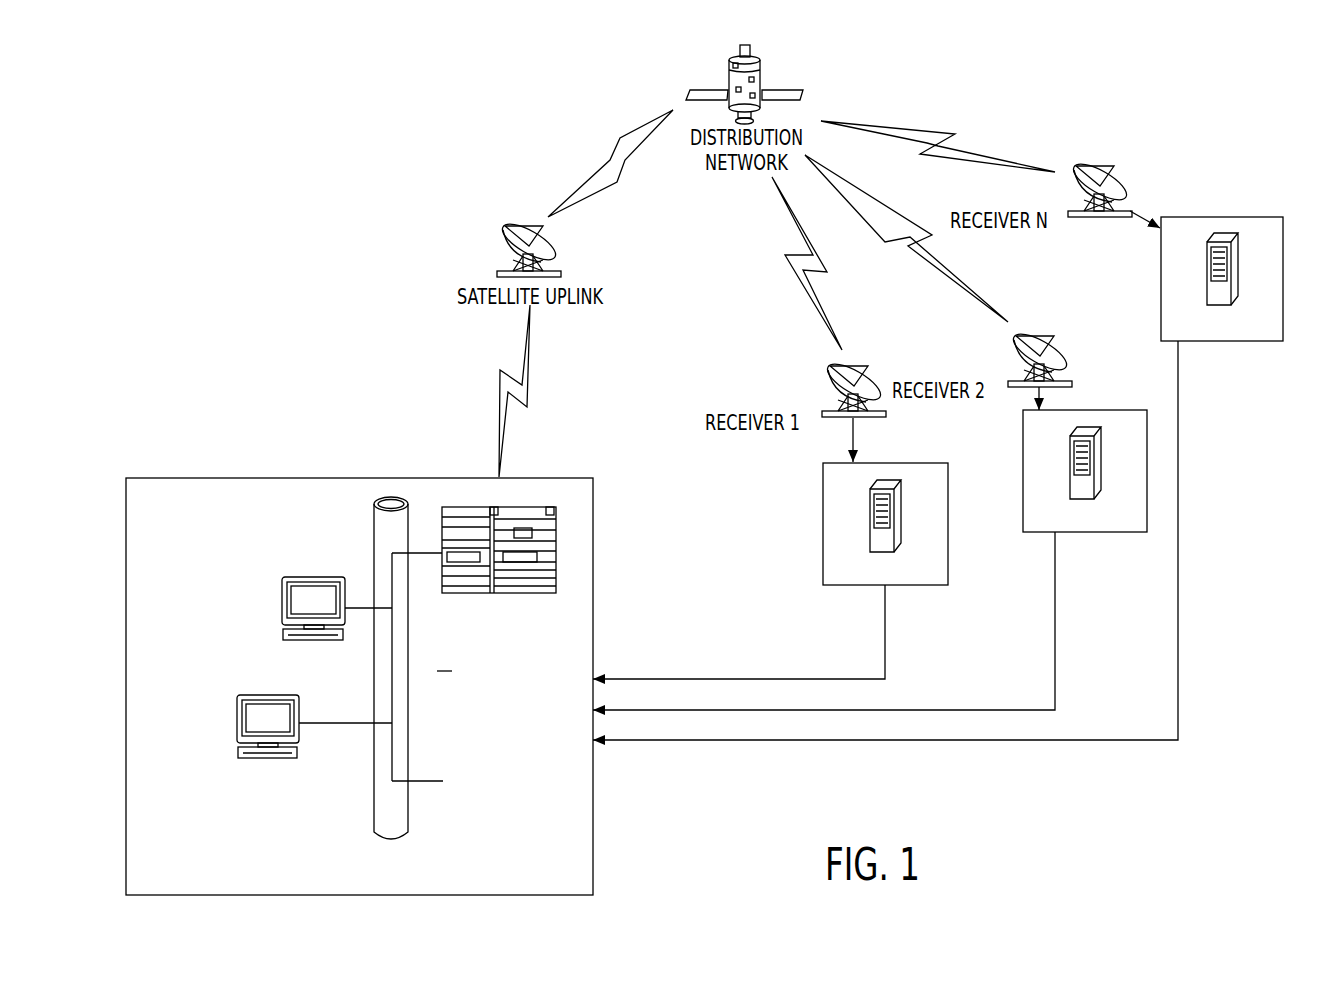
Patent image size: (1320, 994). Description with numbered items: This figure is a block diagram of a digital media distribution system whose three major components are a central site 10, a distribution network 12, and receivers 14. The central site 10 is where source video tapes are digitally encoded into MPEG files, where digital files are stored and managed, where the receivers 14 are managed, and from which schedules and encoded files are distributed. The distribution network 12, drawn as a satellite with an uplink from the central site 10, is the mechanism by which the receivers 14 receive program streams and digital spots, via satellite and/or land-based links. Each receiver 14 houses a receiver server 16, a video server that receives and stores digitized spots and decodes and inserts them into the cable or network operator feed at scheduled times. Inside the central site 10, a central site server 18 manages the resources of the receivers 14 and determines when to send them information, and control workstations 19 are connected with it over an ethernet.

The central site 10 is at (188, 477).
The distribution network 12 is at (728, 80).
The receiver 14 is at (830, 382).
The receiver server 16 is at (912, 463).
The central site server 18 is at (556, 553).
The control workstation 19 is at (282, 598).